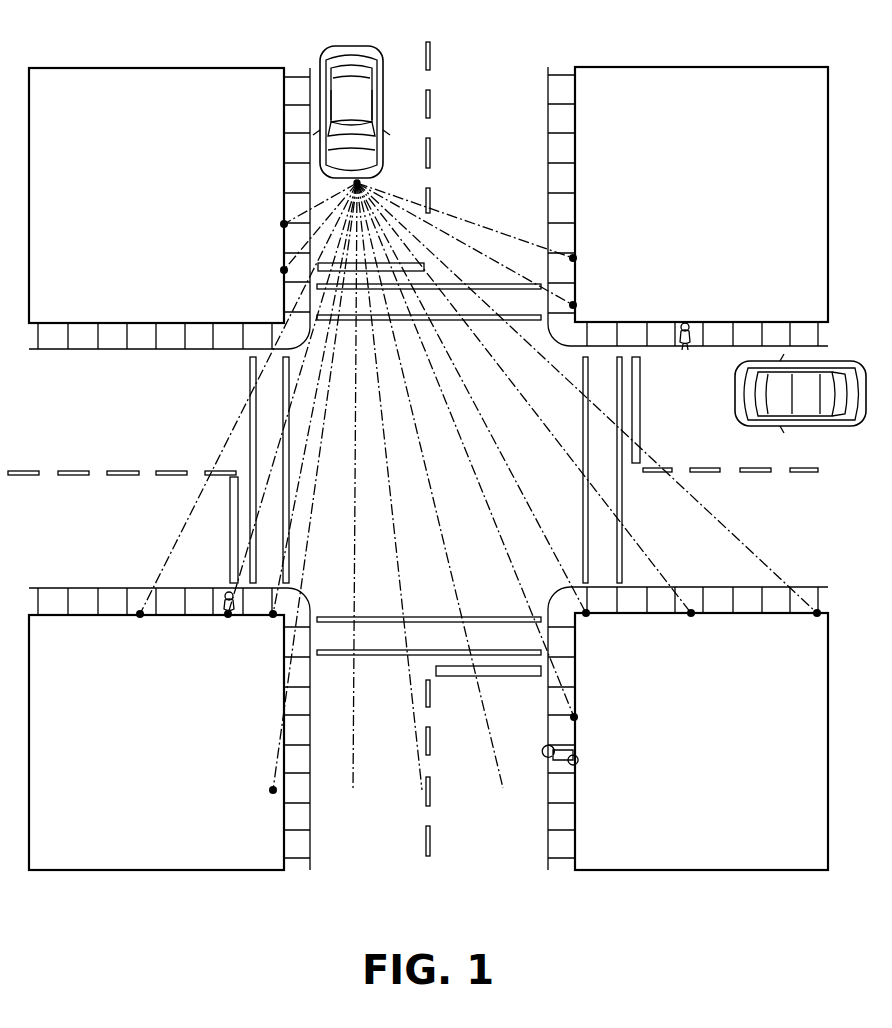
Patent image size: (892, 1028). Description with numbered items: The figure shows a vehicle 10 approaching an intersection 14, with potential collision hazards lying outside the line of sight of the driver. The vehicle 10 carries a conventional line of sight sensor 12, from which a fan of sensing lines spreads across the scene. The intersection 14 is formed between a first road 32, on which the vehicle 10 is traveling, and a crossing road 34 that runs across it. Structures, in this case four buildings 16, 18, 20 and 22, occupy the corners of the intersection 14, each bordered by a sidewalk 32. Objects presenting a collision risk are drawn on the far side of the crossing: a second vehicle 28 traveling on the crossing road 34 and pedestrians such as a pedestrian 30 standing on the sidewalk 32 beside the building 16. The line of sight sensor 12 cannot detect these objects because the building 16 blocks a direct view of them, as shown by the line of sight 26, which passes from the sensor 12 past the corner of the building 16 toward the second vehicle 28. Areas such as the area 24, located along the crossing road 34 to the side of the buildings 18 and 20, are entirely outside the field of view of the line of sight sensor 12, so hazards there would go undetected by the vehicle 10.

The vehicle 10 is at (353, 46).
The line of sight sensor 12 is at (370, 180).
The intersection 14 is at (446, 508).
The building 16 is at (683, 183).
The building 18 is at (146, 186).
The building 20 is at (146, 730).
The building 22 is at (688, 725).
The area outside field of view 24 is at (106, 525).
The line of sight 26 is at (808, 473).
The second vehicle 28 is at (822, 405).
The pedestrian 30 is at (688, 322).
The first road 32 is at (476, 106).
The crossing road 34 is at (741, 506).